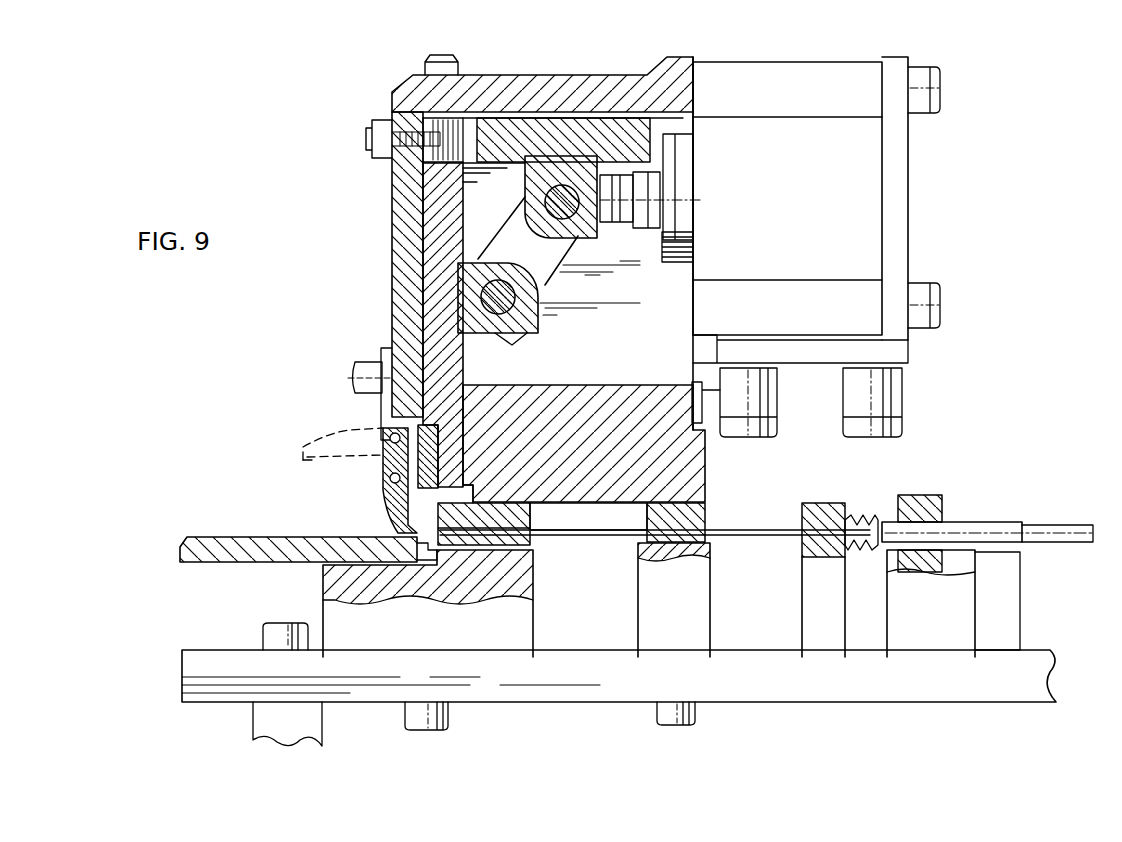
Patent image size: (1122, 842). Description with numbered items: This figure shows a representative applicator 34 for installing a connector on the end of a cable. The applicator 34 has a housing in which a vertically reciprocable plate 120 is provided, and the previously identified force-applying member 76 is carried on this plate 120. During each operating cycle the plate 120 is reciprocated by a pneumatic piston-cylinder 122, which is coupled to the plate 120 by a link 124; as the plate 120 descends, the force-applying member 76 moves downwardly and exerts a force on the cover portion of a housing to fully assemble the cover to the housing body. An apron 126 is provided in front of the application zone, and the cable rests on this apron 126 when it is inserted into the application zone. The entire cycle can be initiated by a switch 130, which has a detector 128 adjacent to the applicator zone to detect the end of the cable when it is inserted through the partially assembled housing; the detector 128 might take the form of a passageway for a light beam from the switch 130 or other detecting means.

The applicator 34 is at (549, 76).
The vertically reciprocable plate 120 is at (440, 281).
The pneumatic piston-cylinder 122 is at (860, 182).
The link 124 is at (548, 265).
The force-applying member 76 is at (390, 466).
The apron 126 is at (266, 566).
The detector 128 is at (533, 545).
The switch 130 is at (968, 527).